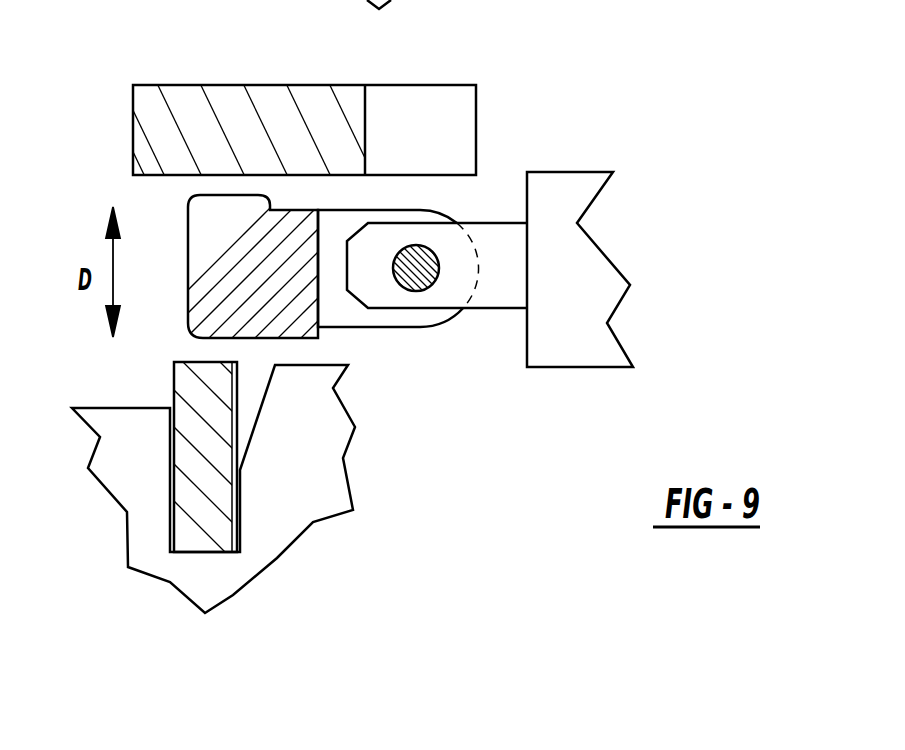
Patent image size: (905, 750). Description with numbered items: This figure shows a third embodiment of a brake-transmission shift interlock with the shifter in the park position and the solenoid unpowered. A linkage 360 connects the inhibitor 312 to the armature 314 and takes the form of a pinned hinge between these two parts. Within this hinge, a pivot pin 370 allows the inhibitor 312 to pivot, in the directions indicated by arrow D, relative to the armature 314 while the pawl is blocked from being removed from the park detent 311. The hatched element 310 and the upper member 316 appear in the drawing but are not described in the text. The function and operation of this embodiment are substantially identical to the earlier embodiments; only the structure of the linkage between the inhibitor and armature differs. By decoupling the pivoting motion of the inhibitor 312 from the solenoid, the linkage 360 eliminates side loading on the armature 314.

The pin 310 is at (215, 518).
The park detent 311 is at (170, 480).
The inhibitor 312 is at (215, 267).
The armature 314 is at (575, 342).
The cover plate 316 is at (307, 85).
The linkage 360 is at (435, 325).
The pivot pin 370 is at (420, 258).